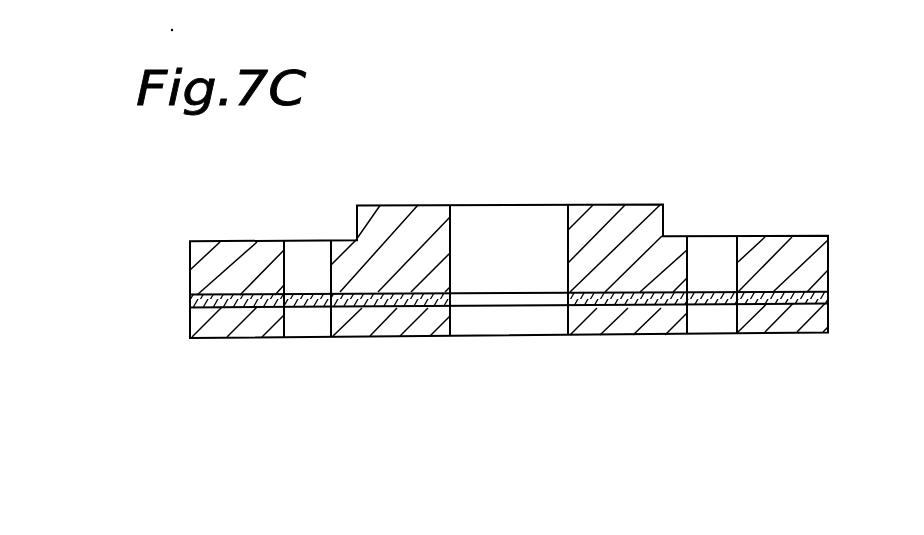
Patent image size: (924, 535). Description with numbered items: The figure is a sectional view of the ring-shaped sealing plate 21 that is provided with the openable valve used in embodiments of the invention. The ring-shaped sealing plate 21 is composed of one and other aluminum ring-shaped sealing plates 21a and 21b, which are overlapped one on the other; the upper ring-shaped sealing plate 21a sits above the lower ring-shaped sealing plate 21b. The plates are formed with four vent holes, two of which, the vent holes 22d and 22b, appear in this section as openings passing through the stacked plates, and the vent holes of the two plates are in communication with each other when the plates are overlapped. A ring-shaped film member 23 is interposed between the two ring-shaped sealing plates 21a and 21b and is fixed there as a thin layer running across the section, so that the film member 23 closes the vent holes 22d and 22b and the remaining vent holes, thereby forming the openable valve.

The ring-shaped sealing plate 21 is at (207, 241).
The ring-shaped sealing plate 21a is at (802, 236).
The ring-shaped sealing plate 21b is at (815, 328).
The vent hole 22d is at (302, 247).
The vent hole 22b is at (713, 237).
The ring-shaped film member 23 is at (828, 294).